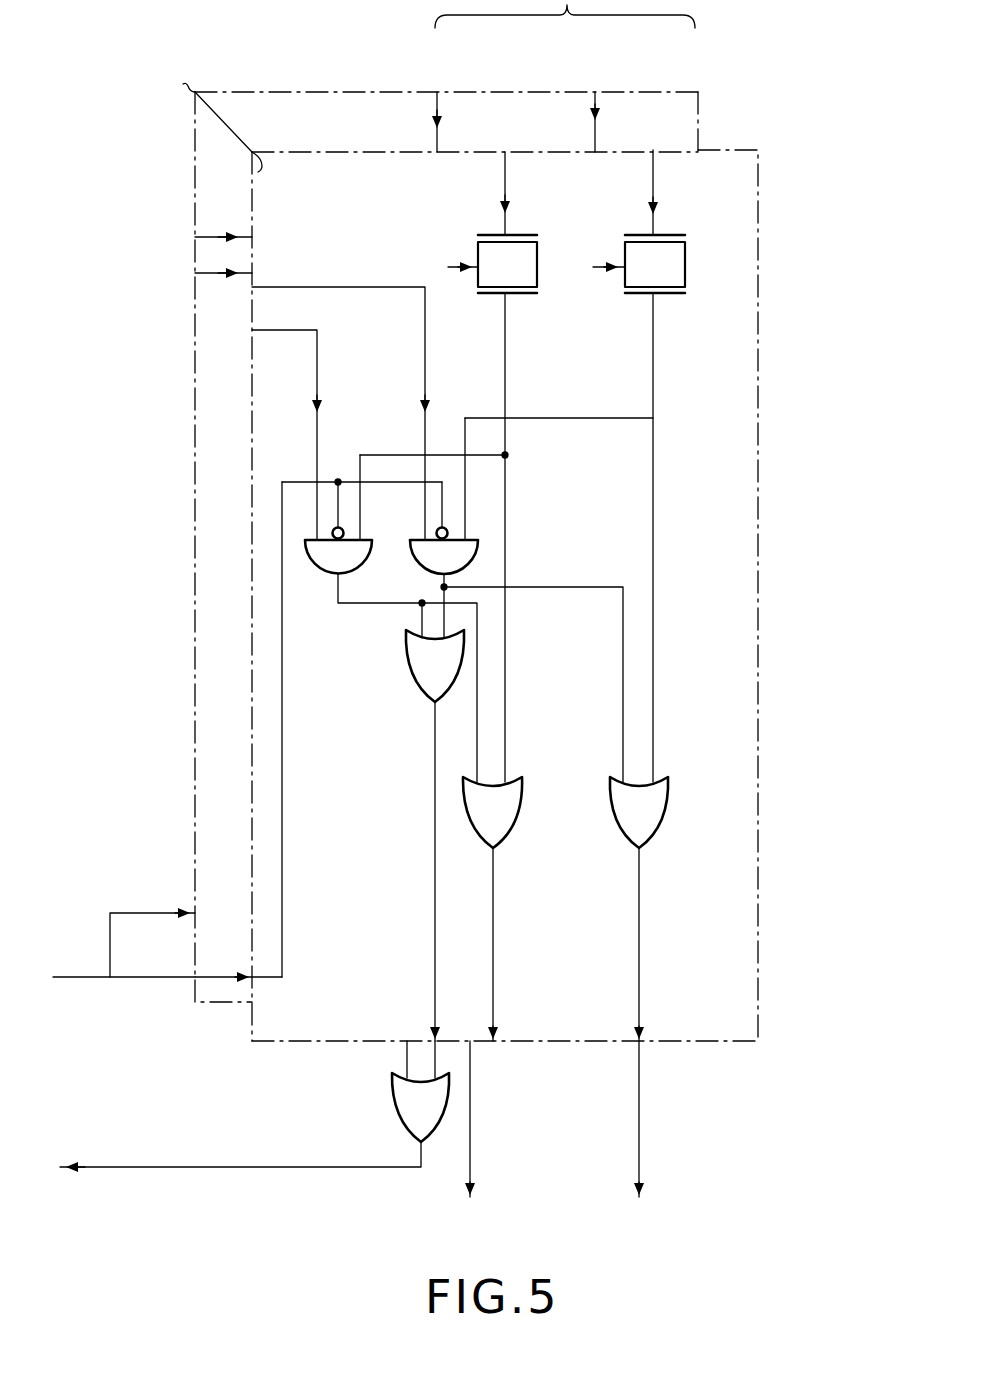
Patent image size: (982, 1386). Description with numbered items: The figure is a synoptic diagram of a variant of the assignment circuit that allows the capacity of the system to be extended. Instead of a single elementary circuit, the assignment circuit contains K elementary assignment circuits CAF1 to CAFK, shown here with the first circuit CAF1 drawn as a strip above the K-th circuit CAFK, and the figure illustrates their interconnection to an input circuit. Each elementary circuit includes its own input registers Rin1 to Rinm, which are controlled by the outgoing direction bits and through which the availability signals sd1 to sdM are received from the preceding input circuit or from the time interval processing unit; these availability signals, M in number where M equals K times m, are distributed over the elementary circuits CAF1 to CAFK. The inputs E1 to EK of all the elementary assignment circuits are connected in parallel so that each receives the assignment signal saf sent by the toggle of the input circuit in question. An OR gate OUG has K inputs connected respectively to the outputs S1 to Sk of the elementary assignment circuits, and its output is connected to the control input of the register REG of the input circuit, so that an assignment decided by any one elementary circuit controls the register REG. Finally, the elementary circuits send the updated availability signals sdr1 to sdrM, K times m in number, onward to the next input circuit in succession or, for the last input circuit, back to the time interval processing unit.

The first elementary assignment circuit CAF1 is at (326, 92).
The number of elementary assignment circuits K is at (222, 125).
The first availability signal sd1 is at (437, 92).
The M-th availability signal sdM is at (653, 176).
The K-th elementary assignment circuit CAFK is at (758, 390).
The first input register Rin1 is at (492, 467).
The m-th input register Rinm is at (639, 508).
The input of first elementary assignment circuit E1 is at (171, 938).
The input of K-th elementary assignment circuit EK is at (255, 980).
The assignment signal saf is at (88, 980).
The output of first elementary assignment circuit S1 is at (407, 1041).
The output of K-th elementary assignment circuit Sk is at (442, 1038).
The OR gate OUG is at (420, 1107).
The register REG is at (240, 1155).
The first updated availability signal sdr1 is at (487, 1044).
The M-th updated availability signal sdrM is at (644, 1045).